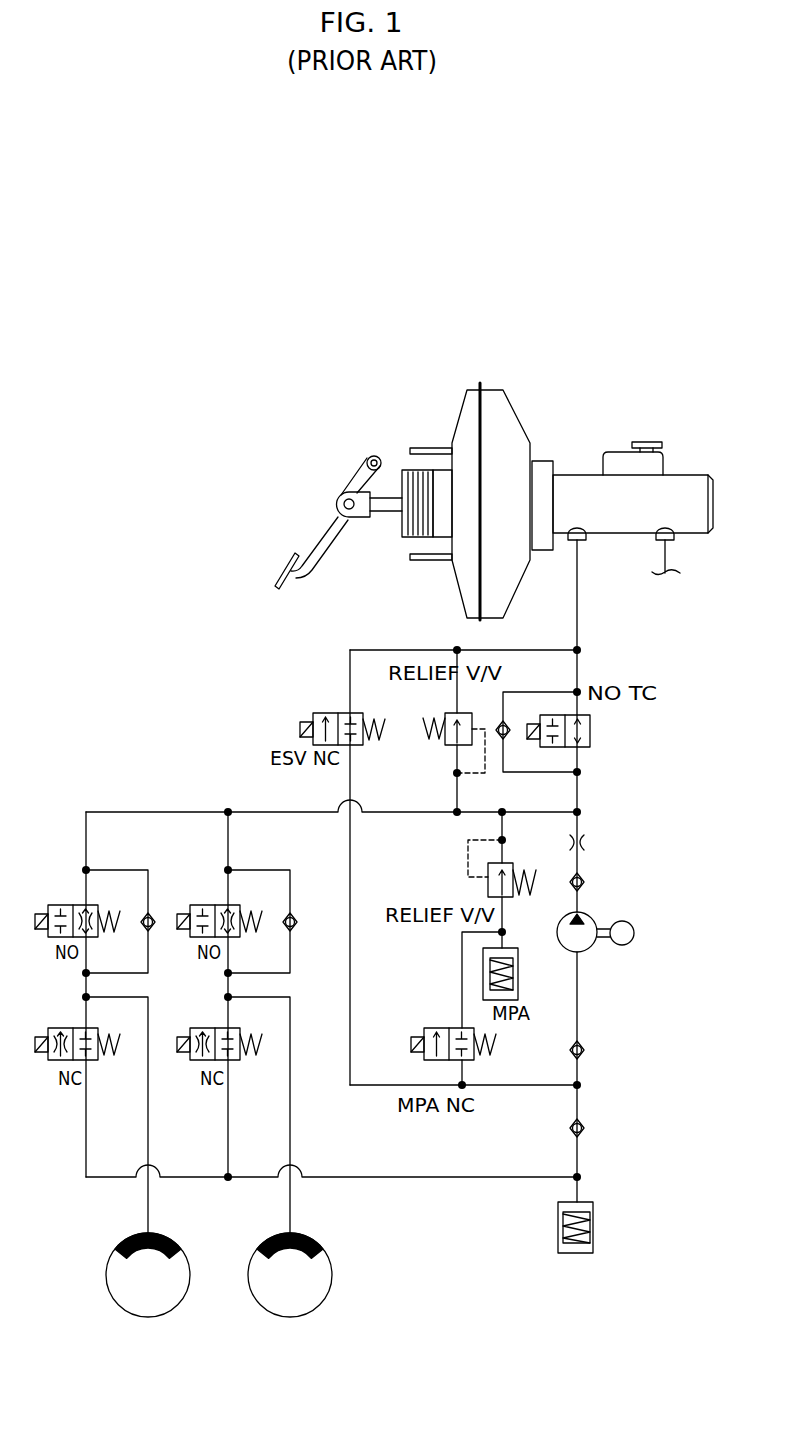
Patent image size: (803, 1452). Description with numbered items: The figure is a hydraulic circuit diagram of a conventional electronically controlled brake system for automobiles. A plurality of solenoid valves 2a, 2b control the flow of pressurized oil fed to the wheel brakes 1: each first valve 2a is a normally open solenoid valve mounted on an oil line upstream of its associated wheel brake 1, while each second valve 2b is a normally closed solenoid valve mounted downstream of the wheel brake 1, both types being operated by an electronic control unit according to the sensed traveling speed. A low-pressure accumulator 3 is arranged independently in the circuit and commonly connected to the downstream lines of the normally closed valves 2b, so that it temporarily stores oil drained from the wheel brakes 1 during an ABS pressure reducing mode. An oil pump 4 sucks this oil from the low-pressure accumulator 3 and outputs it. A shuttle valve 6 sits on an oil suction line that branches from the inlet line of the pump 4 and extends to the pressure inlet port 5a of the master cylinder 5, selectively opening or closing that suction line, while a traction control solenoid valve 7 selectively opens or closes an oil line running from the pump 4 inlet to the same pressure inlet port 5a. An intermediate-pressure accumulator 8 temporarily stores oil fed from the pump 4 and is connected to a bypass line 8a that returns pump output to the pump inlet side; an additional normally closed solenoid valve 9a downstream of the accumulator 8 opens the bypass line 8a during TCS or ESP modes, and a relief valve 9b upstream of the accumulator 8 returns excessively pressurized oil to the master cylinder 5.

The wheel brake 1 is at (120, 1255).
The first solenoid valve 2a is at (78, 905).
The second solenoid valve 2b is at (80, 1028).
The low-pressure accumulator 3 is at (558, 1227).
The oil pump 4 is at (593, 948).
The master cylinder 5 is at (572, 483).
The pressure inlet port 5a is at (583, 541).
The shuttle valve 6 is at (334, 713).
The traction control solenoid valve 7 is at (592, 737).
The intermediate-pressure accumulator 8 is at (518, 973).
The bypass line 8a is at (462, 962).
The NC-type solenoid valve 9a is at (443, 1028).
The relief valve 9b is at (510, 863).